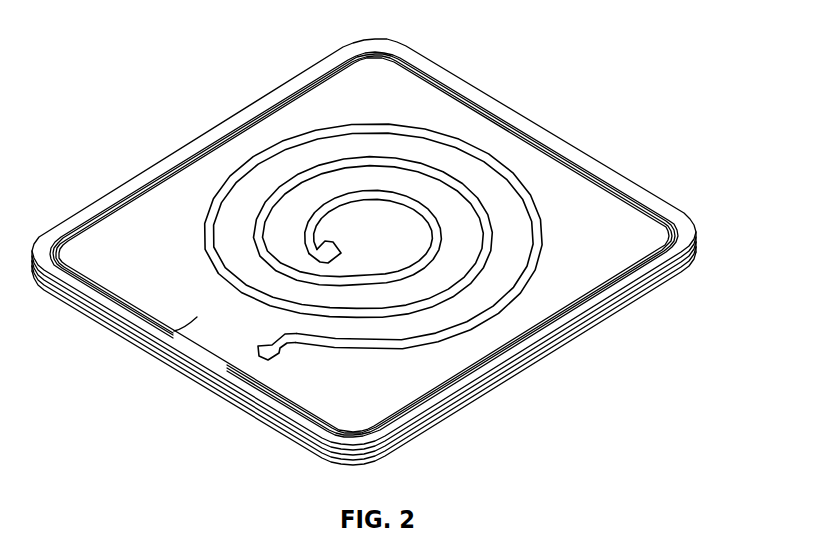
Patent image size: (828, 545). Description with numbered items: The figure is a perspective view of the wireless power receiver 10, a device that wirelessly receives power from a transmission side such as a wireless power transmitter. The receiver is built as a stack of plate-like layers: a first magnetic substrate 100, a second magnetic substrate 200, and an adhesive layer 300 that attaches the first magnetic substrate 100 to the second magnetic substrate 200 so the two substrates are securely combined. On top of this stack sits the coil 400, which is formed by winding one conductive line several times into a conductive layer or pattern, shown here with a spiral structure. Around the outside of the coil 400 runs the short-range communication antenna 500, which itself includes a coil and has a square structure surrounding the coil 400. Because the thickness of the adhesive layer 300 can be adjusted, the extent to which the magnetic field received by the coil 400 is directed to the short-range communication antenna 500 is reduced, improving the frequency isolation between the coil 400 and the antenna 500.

The wireless power receiver 10 is at (99, 10).
The first magnetic substrate 100 is at (678, 266).
The second magnetic substrate 200 is at (580, 323).
The adhesive layer 300 is at (630, 293).
The coil 400 is at (328, 131).
The short-range communication antenna 500 is at (480, 373).